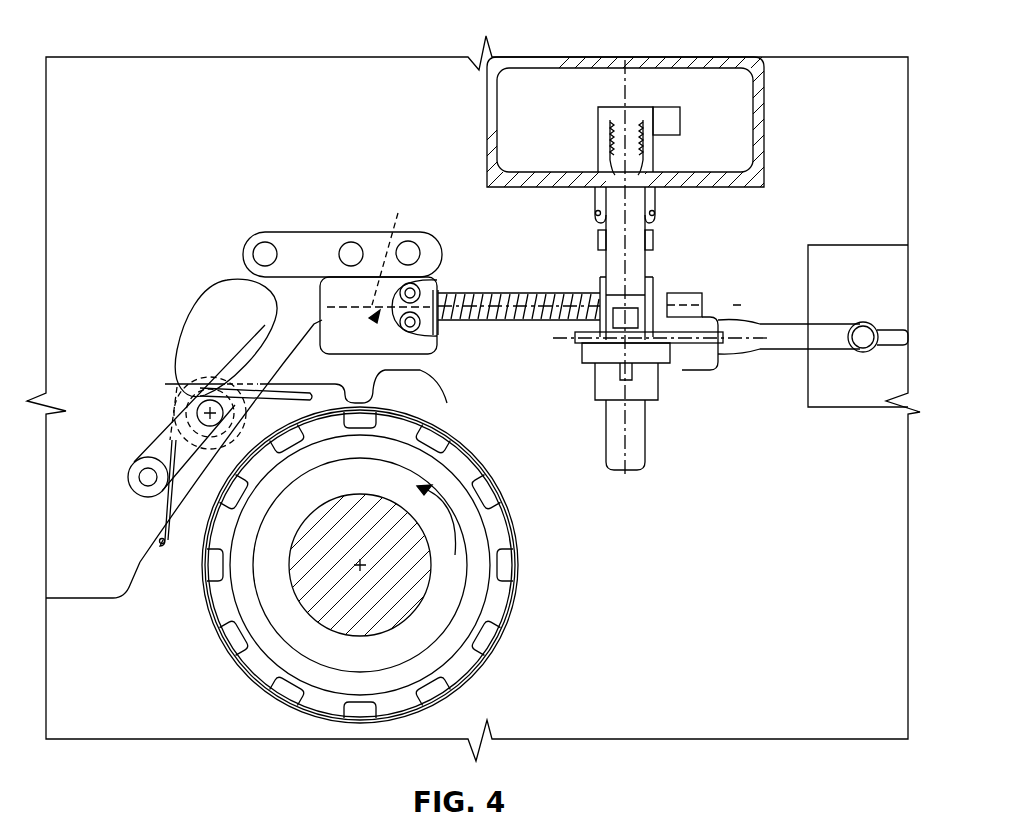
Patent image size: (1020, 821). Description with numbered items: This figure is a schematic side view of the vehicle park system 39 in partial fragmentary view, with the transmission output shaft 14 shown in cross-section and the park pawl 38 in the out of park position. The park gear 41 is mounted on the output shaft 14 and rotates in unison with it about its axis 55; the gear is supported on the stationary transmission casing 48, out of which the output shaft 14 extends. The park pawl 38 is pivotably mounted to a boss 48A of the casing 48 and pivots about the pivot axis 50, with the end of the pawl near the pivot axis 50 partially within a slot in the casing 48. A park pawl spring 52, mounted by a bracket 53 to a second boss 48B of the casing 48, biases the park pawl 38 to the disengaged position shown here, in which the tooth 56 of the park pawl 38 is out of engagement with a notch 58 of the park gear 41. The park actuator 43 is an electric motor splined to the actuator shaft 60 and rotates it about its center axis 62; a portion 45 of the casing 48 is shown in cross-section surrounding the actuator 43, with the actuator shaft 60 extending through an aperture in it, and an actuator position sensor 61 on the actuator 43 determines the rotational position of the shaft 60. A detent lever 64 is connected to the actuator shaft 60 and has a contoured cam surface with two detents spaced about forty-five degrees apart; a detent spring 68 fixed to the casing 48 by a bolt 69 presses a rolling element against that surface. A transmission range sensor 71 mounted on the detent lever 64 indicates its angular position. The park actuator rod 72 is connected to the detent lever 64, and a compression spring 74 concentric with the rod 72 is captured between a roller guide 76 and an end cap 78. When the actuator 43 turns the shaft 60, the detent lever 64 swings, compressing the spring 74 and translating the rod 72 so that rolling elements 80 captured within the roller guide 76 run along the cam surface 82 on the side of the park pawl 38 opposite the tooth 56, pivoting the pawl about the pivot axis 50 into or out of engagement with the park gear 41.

The output shaft 14 is at (343, 607).
The park pawl 38 is at (193, 370).
The vehicle park system 39 is at (560, 532).
The park gear 41 is at (215, 612).
The park actuator 43 is at (598, 128).
The portion of the casing 45 is at (742, 58).
The transmission casing 48 is at (755, 727).
The boss of the casing 48A is at (144, 77).
The boss of the casing 48B is at (838, 392).
The pivot axis 50 is at (204, 400).
The park pawl spring 52 is at (165, 515).
The bracket 53 is at (230, 343).
The axis of the output shaft 55 is at (362, 563).
The tooth 56 is at (382, 358).
The notch 58 is at (380, 402).
The actuator shaft 60 is at (650, 272).
The actuator position sensor 61 is at (664, 108).
The center axis 62 is at (648, 228).
The detent lever 64 is at (705, 360).
The detent spring 68 is at (763, 338).
The bolt 69 is at (863, 330).
The transmission range sensor 71 is at (583, 350).
The park actuator rod 72 is at (527, 293).
The compression spring 74 is at (525, 320).
The roller guide 76 is at (415, 232).
The end cap 78 is at (700, 298).
The rolling elements 80 is at (420, 322).
The cam surface 82 is at (378, 252).